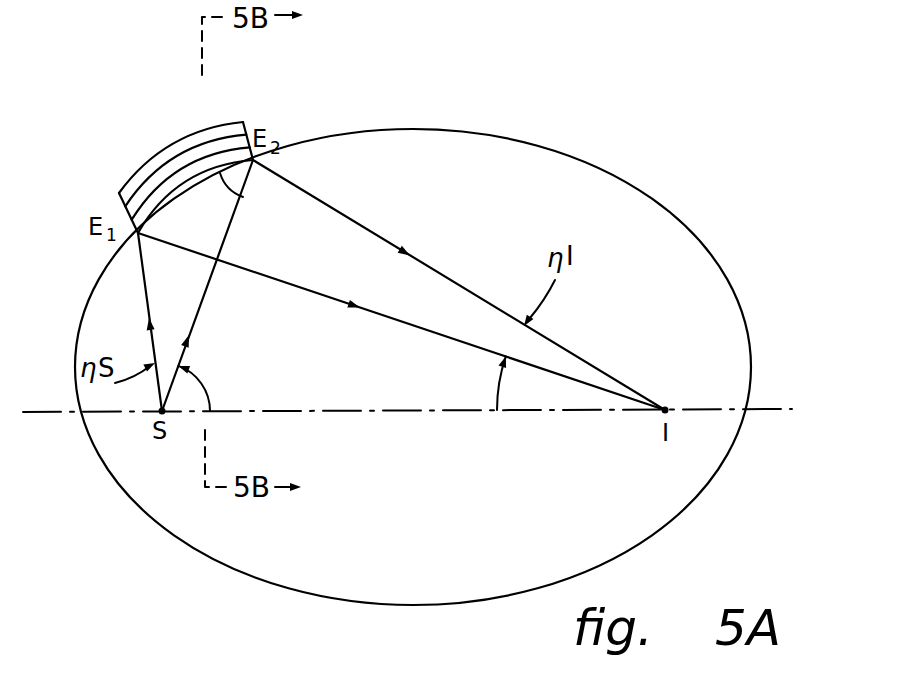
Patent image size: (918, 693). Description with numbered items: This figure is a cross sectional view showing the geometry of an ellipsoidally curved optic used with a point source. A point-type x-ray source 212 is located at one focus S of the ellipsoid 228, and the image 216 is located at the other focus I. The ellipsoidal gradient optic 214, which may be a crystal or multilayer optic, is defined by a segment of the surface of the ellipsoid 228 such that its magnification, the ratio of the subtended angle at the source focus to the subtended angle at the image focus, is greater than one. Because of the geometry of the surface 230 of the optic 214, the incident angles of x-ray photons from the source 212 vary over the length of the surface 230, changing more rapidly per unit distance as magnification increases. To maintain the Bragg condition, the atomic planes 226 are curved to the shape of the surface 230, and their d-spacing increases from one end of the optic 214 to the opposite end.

The point-type x-ray source 212 is at (160, 414).
The ellipsoidal gradient optic 214 is at (152, 162).
The image 216 is at (665, 405).
The atomic planes 226 is at (228, 122).
The ellipsoid 228 is at (520, 140).
The surface 230 is at (243, 197).